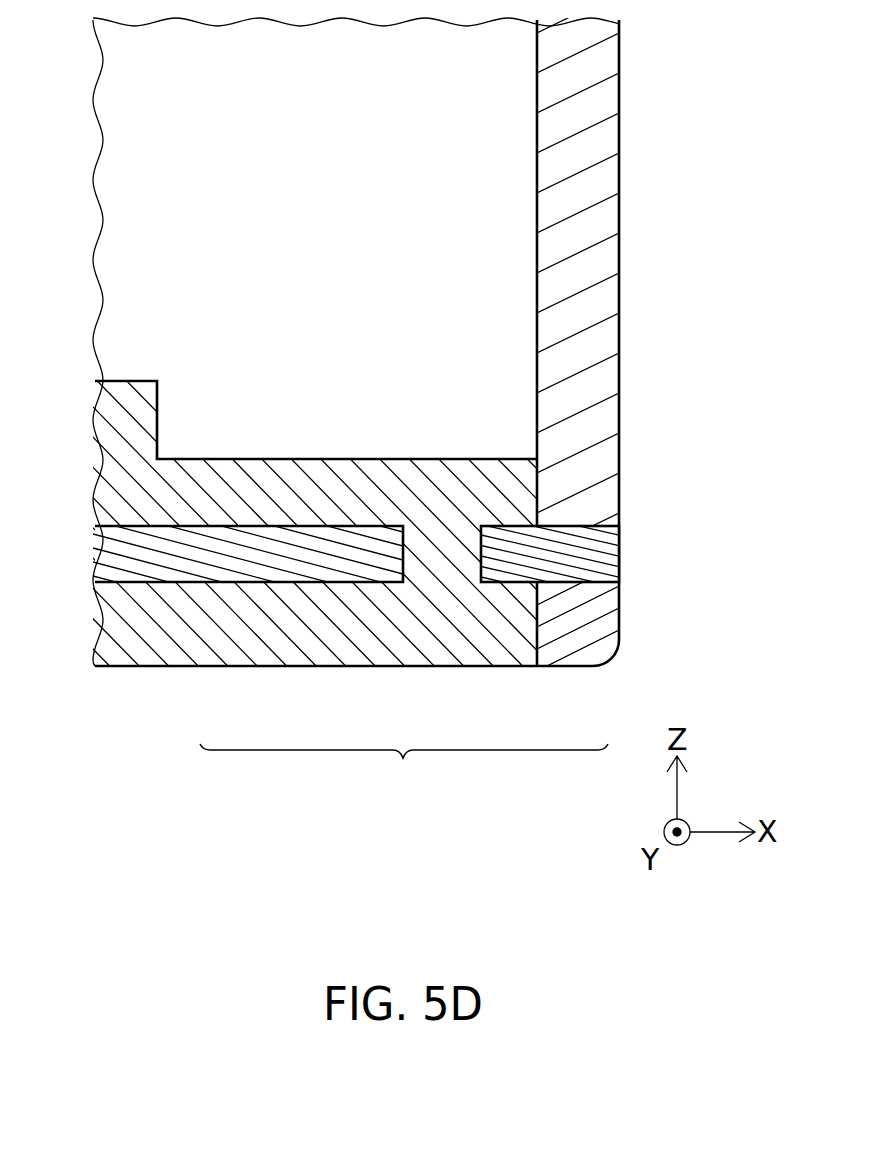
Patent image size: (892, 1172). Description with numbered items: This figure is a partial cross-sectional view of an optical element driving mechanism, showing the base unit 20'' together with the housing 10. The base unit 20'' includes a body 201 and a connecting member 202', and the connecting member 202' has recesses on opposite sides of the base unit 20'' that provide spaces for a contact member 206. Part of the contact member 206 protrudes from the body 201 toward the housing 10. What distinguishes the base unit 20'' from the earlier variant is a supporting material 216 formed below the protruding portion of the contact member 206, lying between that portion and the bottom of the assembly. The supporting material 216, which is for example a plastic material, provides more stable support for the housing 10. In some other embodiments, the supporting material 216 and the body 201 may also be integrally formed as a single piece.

The housing 10 is at (592, 234).
The body 201 is at (343, 640).
The connecting member 202' is at (248, 600).
The contact member 206 is at (507, 553).
The supporting material 216 is at (584, 623).
The base unit 20'' is at (404, 768).